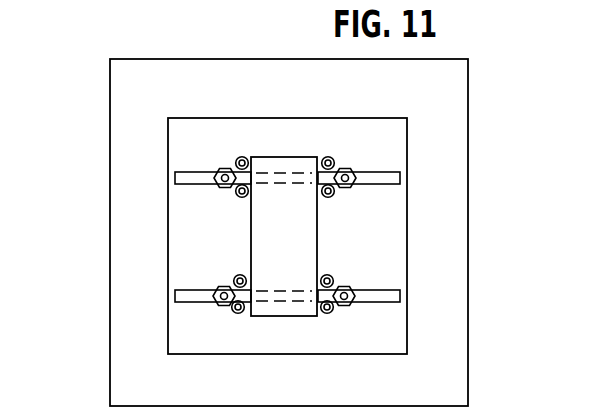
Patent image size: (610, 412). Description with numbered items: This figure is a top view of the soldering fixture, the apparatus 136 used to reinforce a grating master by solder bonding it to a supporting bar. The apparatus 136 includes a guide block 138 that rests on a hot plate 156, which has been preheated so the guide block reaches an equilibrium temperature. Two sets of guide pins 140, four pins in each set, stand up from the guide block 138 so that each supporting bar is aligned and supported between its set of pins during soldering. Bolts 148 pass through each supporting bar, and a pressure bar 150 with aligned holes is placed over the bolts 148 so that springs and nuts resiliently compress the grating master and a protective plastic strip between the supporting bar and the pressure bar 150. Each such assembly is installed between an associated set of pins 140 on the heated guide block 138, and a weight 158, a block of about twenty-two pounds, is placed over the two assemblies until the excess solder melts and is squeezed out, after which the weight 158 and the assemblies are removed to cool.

The apparatus 136 is at (481, 234).
The guide block 138 is at (335, 128).
The guide pins 140 is at (238, 158).
The bolts 148 is at (351, 182).
The pressure bar 150 is at (394, 174).
The hot plate 156 is at (118, 283).
The weight 158 is at (282, 165).